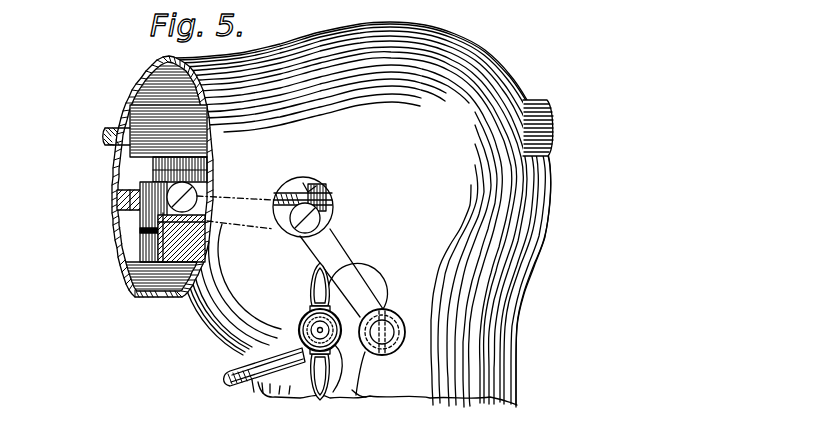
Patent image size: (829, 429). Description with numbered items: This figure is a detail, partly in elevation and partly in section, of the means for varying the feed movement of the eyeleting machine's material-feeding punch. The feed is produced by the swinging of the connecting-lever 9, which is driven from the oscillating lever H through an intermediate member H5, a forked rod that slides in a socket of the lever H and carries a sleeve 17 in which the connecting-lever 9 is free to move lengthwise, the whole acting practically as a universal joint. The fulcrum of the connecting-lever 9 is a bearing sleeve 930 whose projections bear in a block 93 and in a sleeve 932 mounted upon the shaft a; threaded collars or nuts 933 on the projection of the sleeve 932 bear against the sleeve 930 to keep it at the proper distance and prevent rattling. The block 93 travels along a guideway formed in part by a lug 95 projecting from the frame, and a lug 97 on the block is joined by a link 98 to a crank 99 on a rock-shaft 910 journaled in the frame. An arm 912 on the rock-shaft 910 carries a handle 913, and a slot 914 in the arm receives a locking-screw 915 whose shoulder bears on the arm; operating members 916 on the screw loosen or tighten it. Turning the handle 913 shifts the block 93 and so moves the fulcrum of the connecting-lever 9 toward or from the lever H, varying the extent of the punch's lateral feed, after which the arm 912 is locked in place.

The lever H is at (332, 214).
The intermediate member H5 is at (306, 178).
The sleeve 17 is at (334, 211).
The shaft a is at (107, 128).
The connecting-lever 9 is at (117, 200).
The block 93 is at (145, 250).
The lug 95 is at (163, 262).
The lug 97 is at (143, 236).
The link 98 is at (213, 214).
The crank 99 is at (355, 285).
The rock-shaft 910 is at (387, 317).
The arm 912 is at (365, 352).
The handle 913 is at (240, 377).
The slot 914 is at (358, 392).
The locking-screw 915 is at (306, 327).
The operating members 916 is at (300, 410).
The sleeve 930 is at (158, 212).
The sleeve 932 is at (130, 110).
The nuts or threaded collars 933 is at (155, 165).